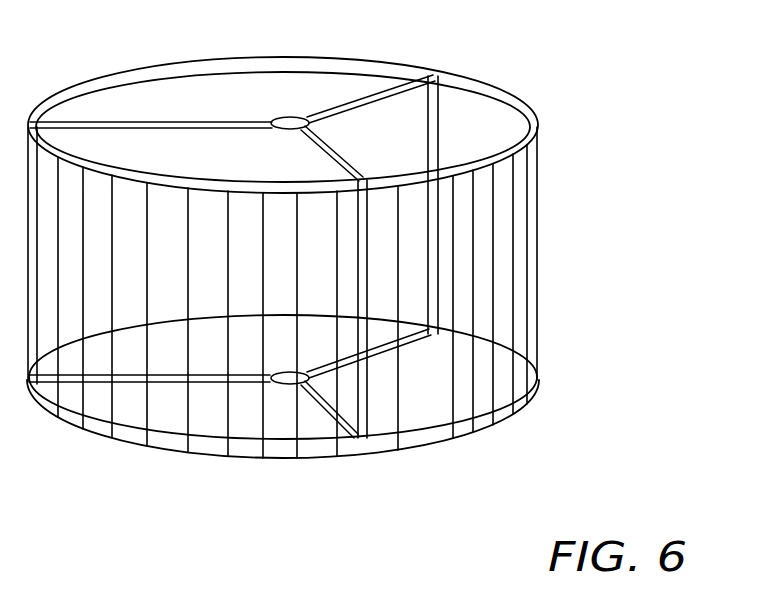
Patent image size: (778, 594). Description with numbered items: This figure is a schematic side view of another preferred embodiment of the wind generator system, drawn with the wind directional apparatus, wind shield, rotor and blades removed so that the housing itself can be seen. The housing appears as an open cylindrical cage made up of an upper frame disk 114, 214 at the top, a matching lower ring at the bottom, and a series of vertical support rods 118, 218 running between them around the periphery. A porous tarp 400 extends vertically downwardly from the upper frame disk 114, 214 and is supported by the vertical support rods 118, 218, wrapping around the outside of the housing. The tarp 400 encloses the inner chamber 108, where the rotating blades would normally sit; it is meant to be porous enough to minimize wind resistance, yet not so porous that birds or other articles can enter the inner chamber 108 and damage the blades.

The inner chamber 108 is at (452, 133).
The upper frame disk 114 is at (374, 125).
The upper frame disk 214 is at (538, 126).
The vertical support rod 118 is at (283, 411).
The vertical support rod 218 is at (360, 422).
The porous tarp 400 is at (374, 265).